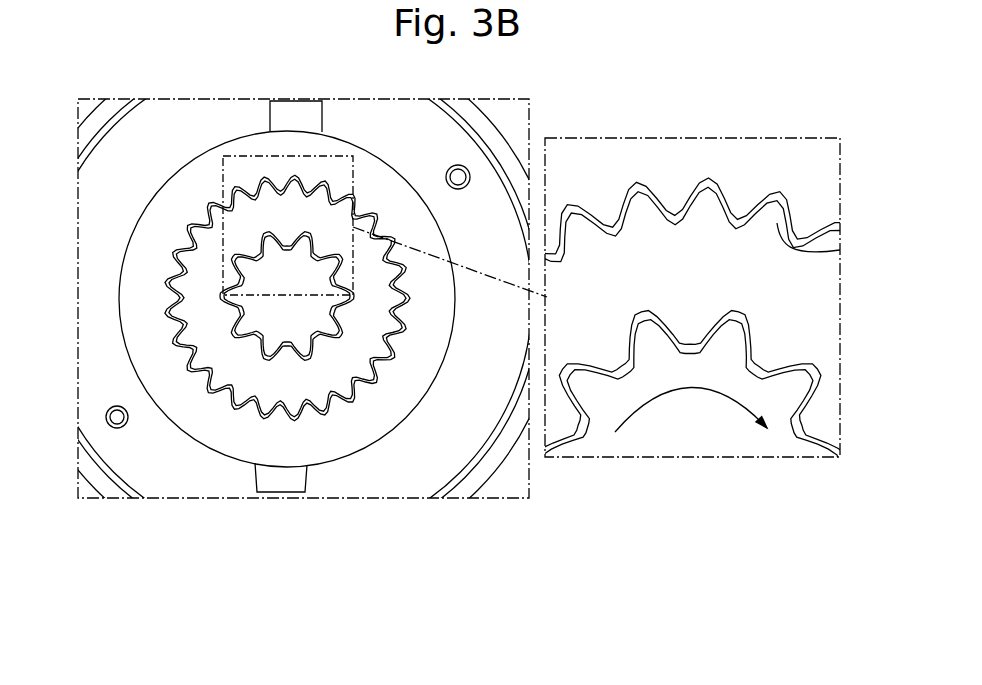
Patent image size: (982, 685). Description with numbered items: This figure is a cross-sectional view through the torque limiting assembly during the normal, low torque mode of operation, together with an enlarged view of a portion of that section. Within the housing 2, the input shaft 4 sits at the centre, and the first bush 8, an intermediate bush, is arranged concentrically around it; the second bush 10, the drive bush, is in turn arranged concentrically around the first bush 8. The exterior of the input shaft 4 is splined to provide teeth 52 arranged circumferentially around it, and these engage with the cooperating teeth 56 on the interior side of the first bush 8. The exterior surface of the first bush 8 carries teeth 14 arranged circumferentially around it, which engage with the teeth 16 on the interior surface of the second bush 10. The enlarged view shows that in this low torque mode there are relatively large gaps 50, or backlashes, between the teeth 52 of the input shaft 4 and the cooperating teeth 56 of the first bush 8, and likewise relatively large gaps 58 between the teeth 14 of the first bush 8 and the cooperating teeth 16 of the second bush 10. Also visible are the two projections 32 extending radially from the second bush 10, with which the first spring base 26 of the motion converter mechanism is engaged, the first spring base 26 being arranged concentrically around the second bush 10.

The housing 2 is at (117, 110).
The input shaft 4 is at (258, 321).
The first bush 8 is at (220, 357).
The second bush 10 is at (198, 425).
The teeth 14 is at (817, 250).
The teeth 16 is at (740, 198).
The first spring base 26 is at (355, 475).
The projections 32 is at (278, 482).
The gaps 50 is at (805, 360).
The teeth 52 is at (793, 387).
The teeth 56 is at (762, 352).
The gaps 58 is at (812, 213).